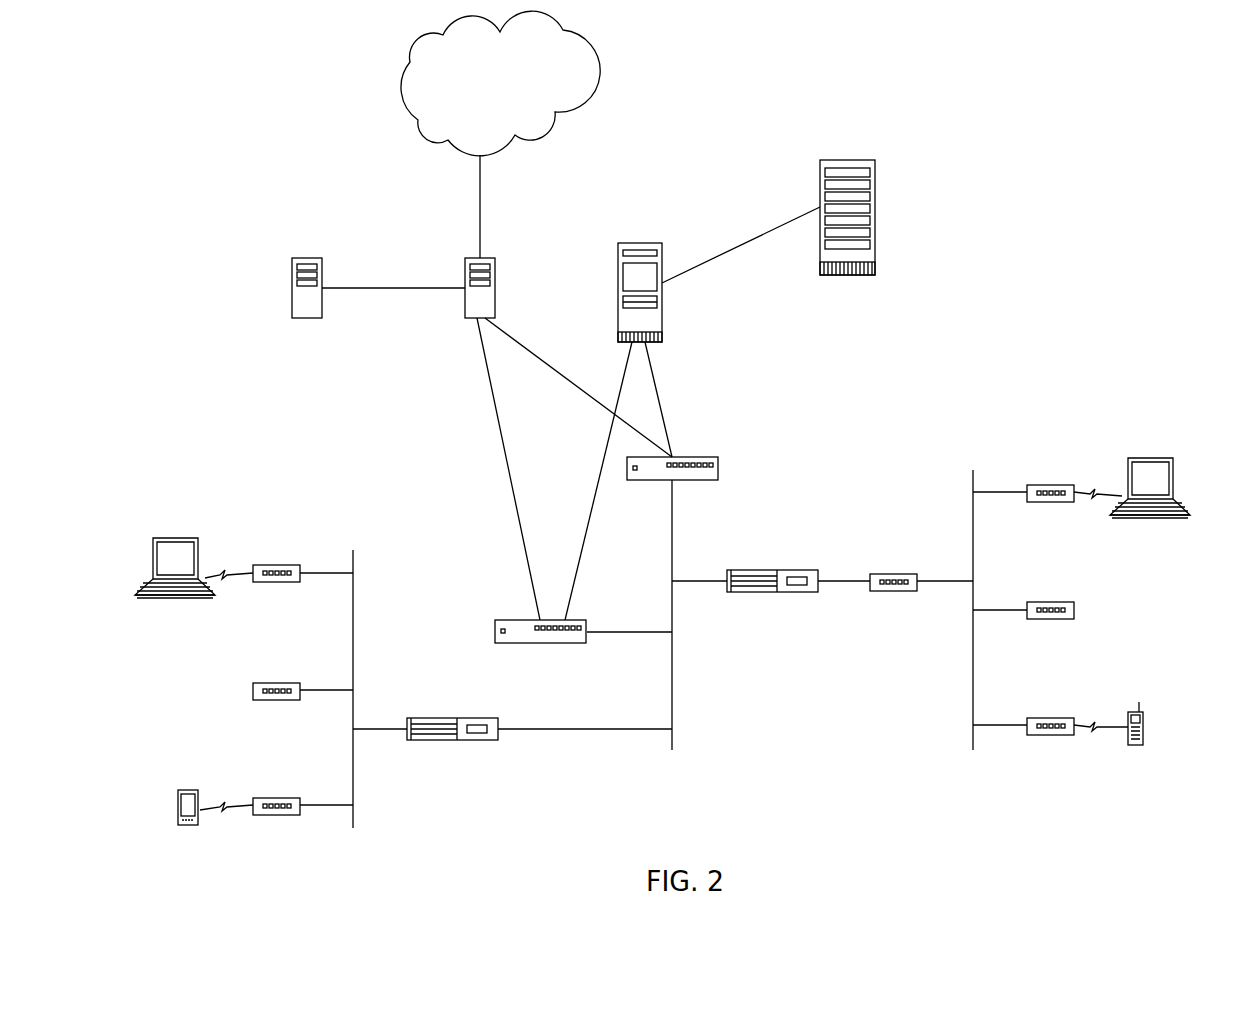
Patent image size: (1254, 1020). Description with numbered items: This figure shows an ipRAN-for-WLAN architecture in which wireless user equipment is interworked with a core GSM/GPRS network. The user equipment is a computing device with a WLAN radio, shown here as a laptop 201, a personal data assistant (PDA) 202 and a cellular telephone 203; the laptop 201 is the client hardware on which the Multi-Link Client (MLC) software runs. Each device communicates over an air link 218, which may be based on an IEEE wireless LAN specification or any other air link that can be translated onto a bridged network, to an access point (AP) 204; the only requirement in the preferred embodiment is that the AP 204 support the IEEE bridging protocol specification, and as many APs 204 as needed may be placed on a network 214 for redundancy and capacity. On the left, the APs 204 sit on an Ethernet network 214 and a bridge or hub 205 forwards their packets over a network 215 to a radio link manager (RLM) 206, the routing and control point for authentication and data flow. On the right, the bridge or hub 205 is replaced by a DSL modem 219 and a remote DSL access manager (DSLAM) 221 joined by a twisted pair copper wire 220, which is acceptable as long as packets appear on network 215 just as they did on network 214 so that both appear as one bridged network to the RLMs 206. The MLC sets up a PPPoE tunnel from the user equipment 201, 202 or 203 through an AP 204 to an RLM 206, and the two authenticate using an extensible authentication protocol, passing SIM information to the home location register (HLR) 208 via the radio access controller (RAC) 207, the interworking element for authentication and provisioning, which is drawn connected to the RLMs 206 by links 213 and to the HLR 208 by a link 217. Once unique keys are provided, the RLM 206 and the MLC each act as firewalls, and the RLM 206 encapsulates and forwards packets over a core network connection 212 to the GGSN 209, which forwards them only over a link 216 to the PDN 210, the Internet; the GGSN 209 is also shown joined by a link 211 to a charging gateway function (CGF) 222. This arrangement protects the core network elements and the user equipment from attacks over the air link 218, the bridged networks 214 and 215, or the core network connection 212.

The laptop (client hardware) 201 is at (150, 563).
The personal data assistant (PDA) 202 is at (178, 808).
The cellular telephone 203 is at (1145, 718).
The access point (AP) 204 is at (275, 565).
The bridge or hub 205 is at (430, 718).
The radio link manager (RLM) 206 is at (697, 457).
The radio access controller (RAC) 207 is at (662, 320).
The home location register (HLR) 208 is at (875, 220).
The GGSN 209 is at (463, 310).
The PDN (the Internet) 210 is at (404, 103).
The link between GGSN and CGF 211 is at (393, 288).
The core network connection 212 is at (558, 372).
The link between radio access controller and radio link manager 213 is at (660, 388).
The network 214 is at (353, 595).
The network 215 is at (578, 730).
The link between Internet and GGSN 216 is at (480, 212).
The HLR link 217 is at (742, 250).
The air link 218 is at (240, 573).
The DSL modem 219 is at (900, 574).
The twisted pair copper wire 220 is at (846, 581).
The DSL access manager (DSLAM) 221 is at (765, 570).
The charging gateway function (CGF) 222 is at (305, 258).